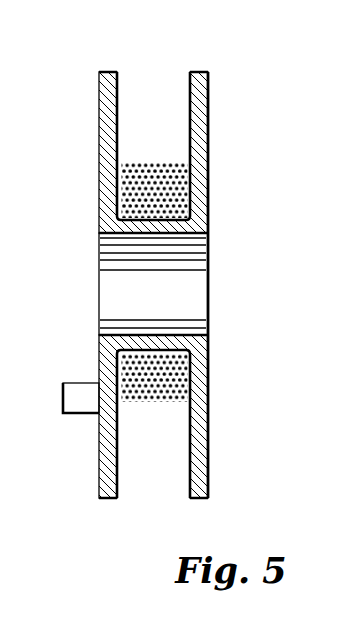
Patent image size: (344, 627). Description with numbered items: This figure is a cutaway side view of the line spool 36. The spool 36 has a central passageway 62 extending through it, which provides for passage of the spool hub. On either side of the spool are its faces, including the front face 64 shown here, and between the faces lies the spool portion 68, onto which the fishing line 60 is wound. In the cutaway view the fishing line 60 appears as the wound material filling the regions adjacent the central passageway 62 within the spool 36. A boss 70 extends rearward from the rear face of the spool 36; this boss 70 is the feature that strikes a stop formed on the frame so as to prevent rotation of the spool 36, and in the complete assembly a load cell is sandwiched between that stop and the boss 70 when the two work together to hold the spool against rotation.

The spool 36 is at (161, 254).
The fishing line 60 is at (157, 163).
The central passageway 62 is at (172, 292).
The front face 64 is at (208, 152).
The spool portion 68 is at (157, 350).
The boss 70 is at (78, 383).